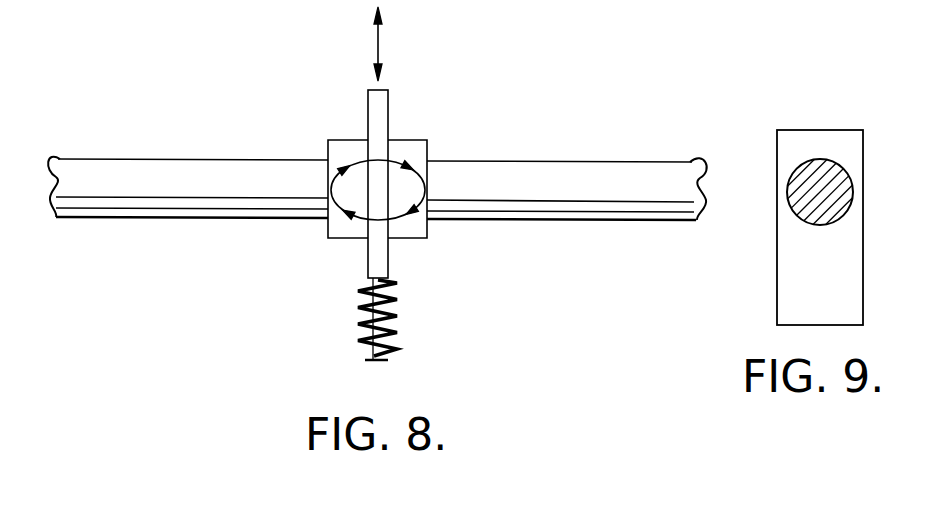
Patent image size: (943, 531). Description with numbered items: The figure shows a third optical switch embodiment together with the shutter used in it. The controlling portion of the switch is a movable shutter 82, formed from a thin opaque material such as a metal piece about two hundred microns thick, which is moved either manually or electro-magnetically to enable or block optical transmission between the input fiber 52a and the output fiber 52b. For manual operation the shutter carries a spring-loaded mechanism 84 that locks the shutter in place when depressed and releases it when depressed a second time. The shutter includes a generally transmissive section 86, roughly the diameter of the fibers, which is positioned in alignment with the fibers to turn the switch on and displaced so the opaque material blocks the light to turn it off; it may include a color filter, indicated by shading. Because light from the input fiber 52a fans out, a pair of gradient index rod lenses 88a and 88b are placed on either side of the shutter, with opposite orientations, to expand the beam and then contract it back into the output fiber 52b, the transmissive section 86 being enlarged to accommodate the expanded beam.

In FIG. 8, the input fiber 52a is at (205, 175).
In FIG. 8, the output fiber 52b is at (552, 175).
In FIG. 8, the movable shutter 82 is at (368, 257).
In FIG. 9, the movable shutter 82 is at (815, 130).
In FIG. 8, the spring-loaded mechanism 84 is at (428, 314).
In FIG. 9, the transmissive section 86 is at (811, 158).
In FIG. 8, the gradient index rod lens 88a is at (343, 140).
In FIG. 8, the gradient index rod lens 88b is at (407, 140).